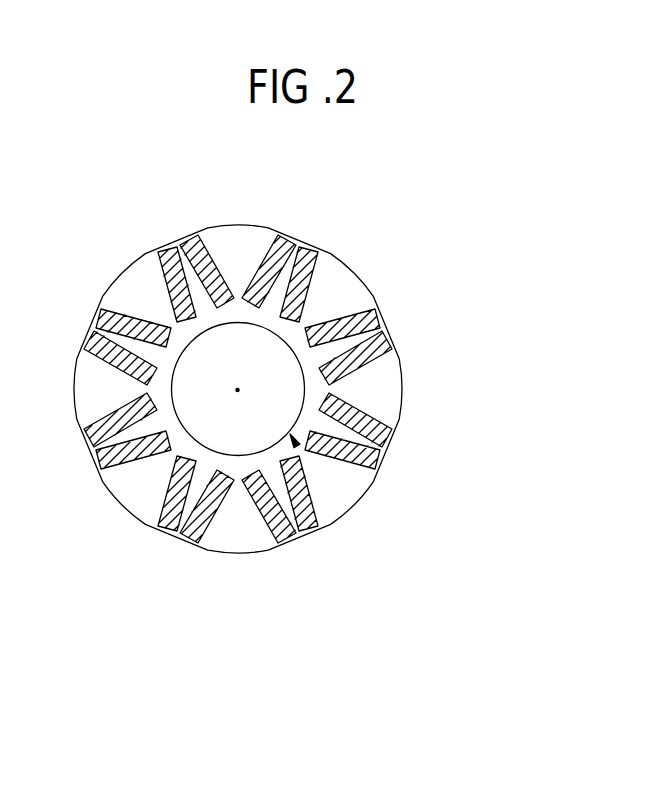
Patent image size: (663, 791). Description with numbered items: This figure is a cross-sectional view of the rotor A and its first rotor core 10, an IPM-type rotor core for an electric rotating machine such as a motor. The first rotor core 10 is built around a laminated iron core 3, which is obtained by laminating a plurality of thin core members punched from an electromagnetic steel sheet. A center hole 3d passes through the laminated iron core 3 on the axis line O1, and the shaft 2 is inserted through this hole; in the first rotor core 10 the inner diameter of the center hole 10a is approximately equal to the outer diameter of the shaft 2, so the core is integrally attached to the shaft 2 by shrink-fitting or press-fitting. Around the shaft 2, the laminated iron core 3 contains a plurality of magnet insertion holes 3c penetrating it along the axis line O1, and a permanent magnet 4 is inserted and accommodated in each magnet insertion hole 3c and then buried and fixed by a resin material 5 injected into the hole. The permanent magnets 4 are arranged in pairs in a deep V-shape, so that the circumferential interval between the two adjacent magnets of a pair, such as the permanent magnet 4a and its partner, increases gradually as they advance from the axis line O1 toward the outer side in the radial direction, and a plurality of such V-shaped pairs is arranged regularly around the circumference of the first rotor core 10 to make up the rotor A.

The shaft 2 is at (238, 447).
The laminated iron core 3 is at (349, 269).
The magnet insertion hole 3c is at (244, 341).
The center hole 3d is at (297, 446).
The permanent magnet 4 is at (244, 341).
The permanent magnet 4a is at (244, 341).
The resin material 5 is at (204, 249).
The first rotor core 10 is at (468, 245).
The center hole 10a is at (388, 503).
The axis line O1 is at (239, 391).
The rotor A is at (440, 197).